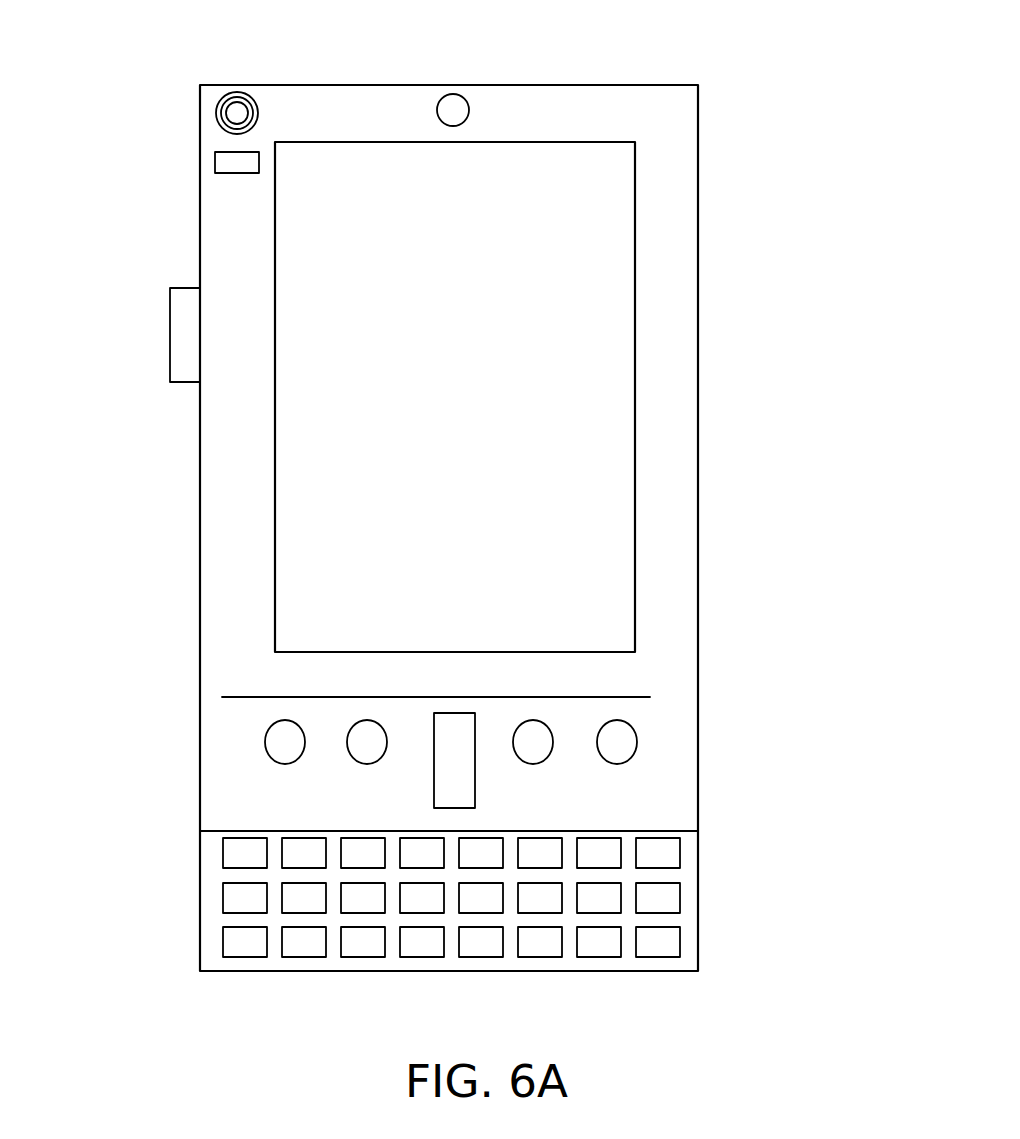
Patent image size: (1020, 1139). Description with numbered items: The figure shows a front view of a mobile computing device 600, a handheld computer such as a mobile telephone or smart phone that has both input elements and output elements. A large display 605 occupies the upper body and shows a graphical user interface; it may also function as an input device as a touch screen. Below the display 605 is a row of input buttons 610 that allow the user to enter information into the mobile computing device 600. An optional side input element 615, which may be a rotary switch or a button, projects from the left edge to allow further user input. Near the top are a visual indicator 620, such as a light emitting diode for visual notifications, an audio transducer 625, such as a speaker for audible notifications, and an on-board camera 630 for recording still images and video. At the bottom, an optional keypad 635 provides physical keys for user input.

The mobile computing device 600 is at (686, 105).
The display 605 is at (385, 565).
The input buttons 610 is at (453, 767).
The side input element 615 is at (168, 335).
The visual indicator 620 is at (215, 167).
The audio transducer 625 is at (217, 115).
The on-board camera 630 is at (463, 108).
The keypad 635 is at (210, 945).